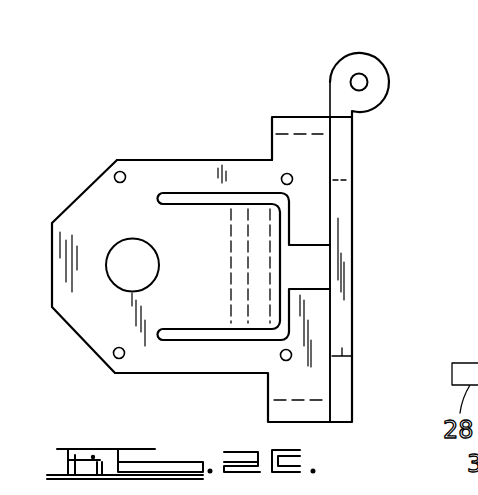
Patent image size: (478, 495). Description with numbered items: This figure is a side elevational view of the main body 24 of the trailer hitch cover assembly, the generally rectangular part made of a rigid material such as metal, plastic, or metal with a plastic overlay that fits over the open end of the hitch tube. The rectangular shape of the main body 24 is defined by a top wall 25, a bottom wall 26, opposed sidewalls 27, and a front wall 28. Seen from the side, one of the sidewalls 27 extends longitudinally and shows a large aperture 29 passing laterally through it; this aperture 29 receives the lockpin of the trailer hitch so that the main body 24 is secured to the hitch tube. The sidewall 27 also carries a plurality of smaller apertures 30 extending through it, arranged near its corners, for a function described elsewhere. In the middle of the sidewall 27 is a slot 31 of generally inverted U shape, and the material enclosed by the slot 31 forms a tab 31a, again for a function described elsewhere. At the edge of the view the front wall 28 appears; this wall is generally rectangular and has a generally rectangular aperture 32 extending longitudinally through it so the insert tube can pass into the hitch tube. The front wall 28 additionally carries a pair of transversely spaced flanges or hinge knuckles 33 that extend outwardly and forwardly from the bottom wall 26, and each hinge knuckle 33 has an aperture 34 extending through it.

The main body 24 is at (274, 110).
The top wall 25 is at (310, 422).
The bottom wall 26 is at (316, 112).
The sidewalls 27 is at (156, 176).
The front wall 28 is at (341, 141).
The aperture 29 is at (117, 248).
The apertures 30 is at (117, 171).
The slot 31 is at (287, 225).
The tabs 31a is at (204, 268).
The aperture 32 is at (347, 338).
The hinge knuckles 33 is at (379, 78).
The aperture 34 is at (355, 80).